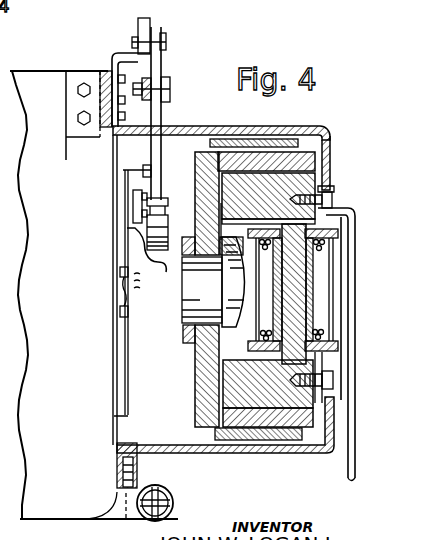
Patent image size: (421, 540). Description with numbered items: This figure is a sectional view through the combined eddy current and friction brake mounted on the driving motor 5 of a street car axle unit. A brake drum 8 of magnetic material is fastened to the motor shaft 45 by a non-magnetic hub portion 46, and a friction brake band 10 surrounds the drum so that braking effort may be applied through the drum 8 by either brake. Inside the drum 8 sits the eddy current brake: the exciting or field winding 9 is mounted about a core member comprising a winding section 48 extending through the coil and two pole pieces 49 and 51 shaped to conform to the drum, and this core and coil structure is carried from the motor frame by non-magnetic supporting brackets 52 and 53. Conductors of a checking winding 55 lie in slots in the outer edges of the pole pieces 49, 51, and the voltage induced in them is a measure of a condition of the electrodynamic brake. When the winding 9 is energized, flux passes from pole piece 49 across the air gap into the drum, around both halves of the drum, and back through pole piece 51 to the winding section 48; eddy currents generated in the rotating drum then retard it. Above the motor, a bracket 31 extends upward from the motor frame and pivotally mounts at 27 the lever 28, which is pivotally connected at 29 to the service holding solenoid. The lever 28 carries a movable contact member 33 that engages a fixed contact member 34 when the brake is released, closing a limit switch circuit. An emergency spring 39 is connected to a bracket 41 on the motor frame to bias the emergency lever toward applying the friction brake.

The driving motor 5 is at (49, 72).
The brake drum 8 is at (329, 152).
The operating winding 9 is at (288, 244).
The brake band 10 is at (302, 135).
The pivot 27 is at (166, 41).
The lever 28 is at (162, 118).
The pivotal connection 29 is at (141, 171).
The bracket 31 is at (122, 55).
The movable contact member 33 is at (168, 228).
The fixed contact member 34 is at (143, 272).
The emergency spring 39 is at (175, 502).
The bracket 41 is at (133, 27).
The motor shaft 45 is at (202, 293).
The hub portion 46 is at (195, 168).
The winding section 48 is at (333, 200).
The pole piece 49 is at (322, 187).
The pole piece 51 is at (308, 390).
The supporting bracket 52 is at (233, 128).
The supporting bracket 53 is at (257, 455).
The checking winding 55 is at (350, 472).